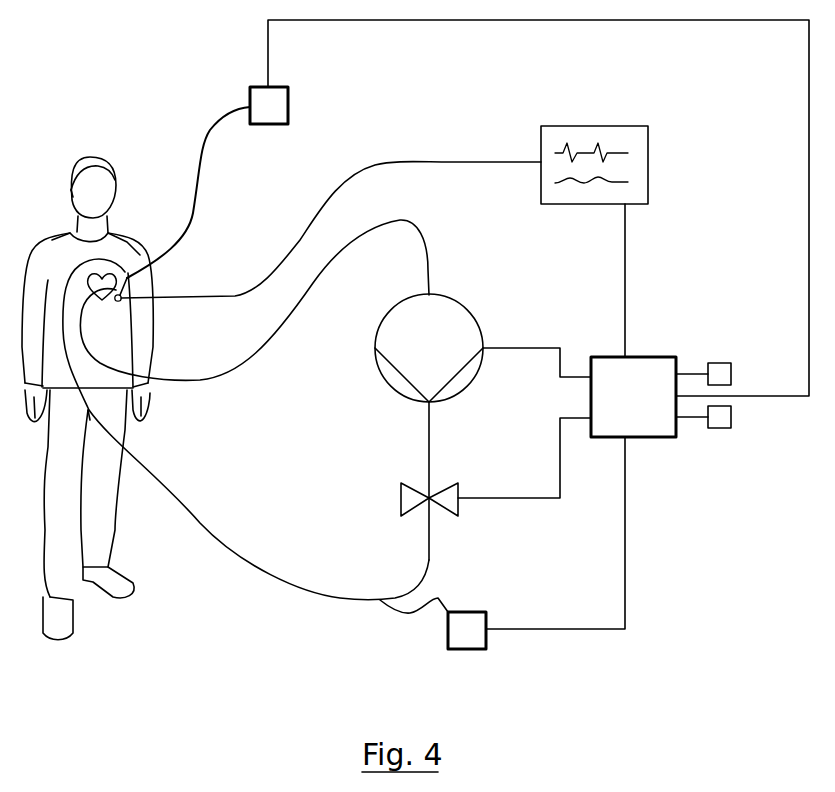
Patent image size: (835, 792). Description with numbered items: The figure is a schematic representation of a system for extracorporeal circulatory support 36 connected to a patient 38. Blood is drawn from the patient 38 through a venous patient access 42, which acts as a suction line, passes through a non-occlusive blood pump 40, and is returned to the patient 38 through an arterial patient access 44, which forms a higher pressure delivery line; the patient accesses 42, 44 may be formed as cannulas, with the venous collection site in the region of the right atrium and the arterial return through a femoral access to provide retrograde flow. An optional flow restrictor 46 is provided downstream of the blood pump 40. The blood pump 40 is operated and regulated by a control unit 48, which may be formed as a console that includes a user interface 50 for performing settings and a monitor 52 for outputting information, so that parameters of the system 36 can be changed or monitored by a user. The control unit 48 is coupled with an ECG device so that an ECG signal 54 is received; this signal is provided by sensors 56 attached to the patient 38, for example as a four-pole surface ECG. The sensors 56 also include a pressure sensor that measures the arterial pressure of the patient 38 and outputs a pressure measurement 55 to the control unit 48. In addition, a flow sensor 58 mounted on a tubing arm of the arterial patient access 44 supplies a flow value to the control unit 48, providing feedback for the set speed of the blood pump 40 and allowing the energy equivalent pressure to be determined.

The system for extracorporeal circulatory support 36 is at (688, 600).
The patient 38 is at (127, 212).
The blood pump 40 is at (455, 305).
The venous patient access 42 is at (268, 347).
The arterial patient access 44 is at (268, 577).
The flow restrictor 46 is at (458, 510).
The control unit 48 is at (651, 439).
The user interface 50 is at (731, 374).
The monitor 52 is at (731, 417).
The ECG signal 54 is at (648, 168).
The pressure measurement 55 is at (289, 107).
The sensors 56 is at (150, 270).
The flow sensor 58 is at (470, 649).